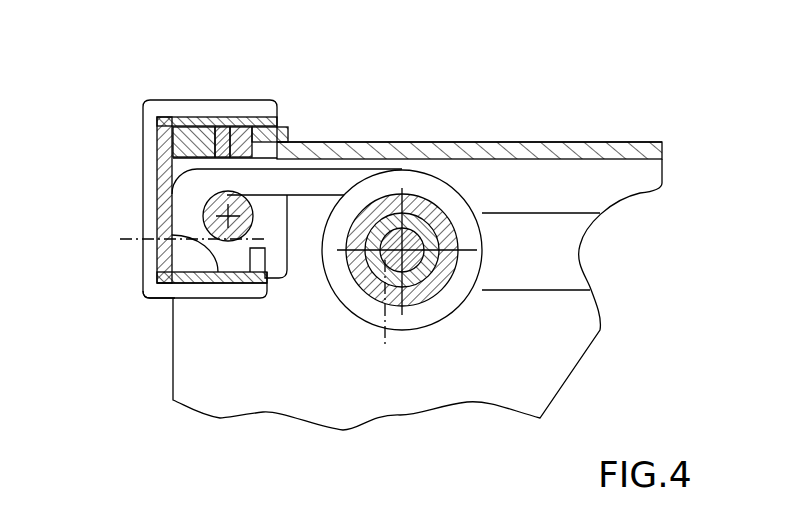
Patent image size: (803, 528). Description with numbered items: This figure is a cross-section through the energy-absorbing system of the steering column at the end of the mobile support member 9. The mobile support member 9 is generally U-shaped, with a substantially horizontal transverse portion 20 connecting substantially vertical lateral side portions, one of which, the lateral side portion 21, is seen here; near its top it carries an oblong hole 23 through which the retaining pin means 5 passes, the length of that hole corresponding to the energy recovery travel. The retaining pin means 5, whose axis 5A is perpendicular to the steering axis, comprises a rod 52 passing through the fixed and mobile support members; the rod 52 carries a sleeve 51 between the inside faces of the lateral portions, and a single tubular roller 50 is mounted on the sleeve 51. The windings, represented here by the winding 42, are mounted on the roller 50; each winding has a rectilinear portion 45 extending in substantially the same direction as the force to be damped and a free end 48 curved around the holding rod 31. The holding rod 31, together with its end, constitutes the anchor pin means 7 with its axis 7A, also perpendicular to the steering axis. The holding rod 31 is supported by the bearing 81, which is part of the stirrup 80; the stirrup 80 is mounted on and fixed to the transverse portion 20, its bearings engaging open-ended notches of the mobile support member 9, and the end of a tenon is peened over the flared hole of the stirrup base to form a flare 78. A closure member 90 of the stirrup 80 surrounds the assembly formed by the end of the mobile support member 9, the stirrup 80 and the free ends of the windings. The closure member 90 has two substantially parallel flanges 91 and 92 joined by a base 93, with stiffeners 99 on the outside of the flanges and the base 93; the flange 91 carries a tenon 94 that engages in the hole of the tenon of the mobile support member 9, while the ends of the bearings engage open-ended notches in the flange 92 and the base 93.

The mobile support member 9 is at (600, 142).
The transverse portion 20 is at (511, 142).
The lateral side portion 21 is at (565, 335).
The oblong hole 23 is at (560, 289).
The rectilinear portion 45 is at (310, 182).
The free end 48 is at (197, 217).
The retaining pin means 5 is at (438, 265).
The axis 5A is at (389, 318).
The roller 50 is at (435, 302).
The sleeve 51 is at (378, 212).
The rod 52 is at (425, 210).
The winding 42 is at (358, 300).
The anchor pin means 7 is at (254, 212).
The axis 7A is at (178, 243).
The flare 78 is at (184, 120).
The stirrup 80 is at (281, 128).
The bearing 81 is at (278, 240).
The closure member 90 is at (150, 140).
The flange 91 is at (172, 118).
The flange 92 is at (193, 300).
The base 93 is at (158, 186).
The tenon 94 is at (234, 128).
The stiffeners 99 is at (148, 270).
The holding rod 31 is at (240, 300).